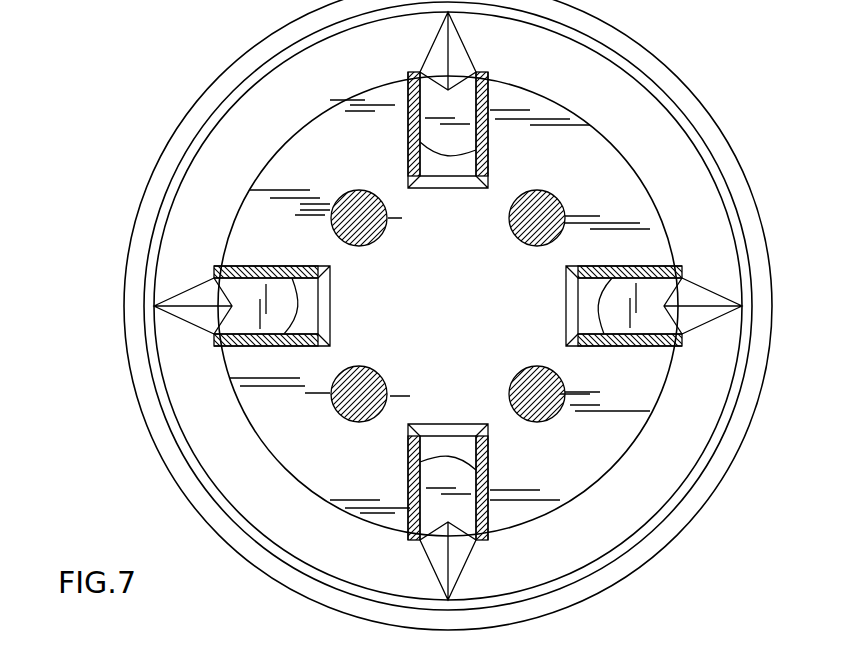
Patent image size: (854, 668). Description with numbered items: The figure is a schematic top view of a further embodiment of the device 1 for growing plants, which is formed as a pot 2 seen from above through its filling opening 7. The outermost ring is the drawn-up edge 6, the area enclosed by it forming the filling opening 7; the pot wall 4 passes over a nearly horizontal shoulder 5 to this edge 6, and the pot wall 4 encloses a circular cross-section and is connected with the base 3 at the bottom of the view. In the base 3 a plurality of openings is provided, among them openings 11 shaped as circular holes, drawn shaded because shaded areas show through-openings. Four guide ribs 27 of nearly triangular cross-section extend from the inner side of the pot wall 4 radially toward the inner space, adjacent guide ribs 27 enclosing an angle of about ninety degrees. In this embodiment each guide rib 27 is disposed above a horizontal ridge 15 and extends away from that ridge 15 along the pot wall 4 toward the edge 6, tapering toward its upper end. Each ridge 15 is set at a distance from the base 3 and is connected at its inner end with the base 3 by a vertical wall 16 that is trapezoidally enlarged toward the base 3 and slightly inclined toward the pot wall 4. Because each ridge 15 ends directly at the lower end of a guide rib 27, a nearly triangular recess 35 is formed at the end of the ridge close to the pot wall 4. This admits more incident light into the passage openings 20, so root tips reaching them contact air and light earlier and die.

The device 1 is at (116, 256).
The pot 2 is at (630, 100).
The base 3 is at (578, 458).
The pot wall 4 is at (643, 482).
The shoulder 5 is at (650, 527).
The edge 6 is at (168, 158).
The filling opening 7 is at (295, 158).
The openings 11 is at (367, 230).
The ridge 15 is at (256, 295).
The vertical wall 16 is at (322, 307).
The passage openings 20 is at (262, 345).
The guide ribs 27 is at (460, 57).
The recess 35 is at (200, 298).